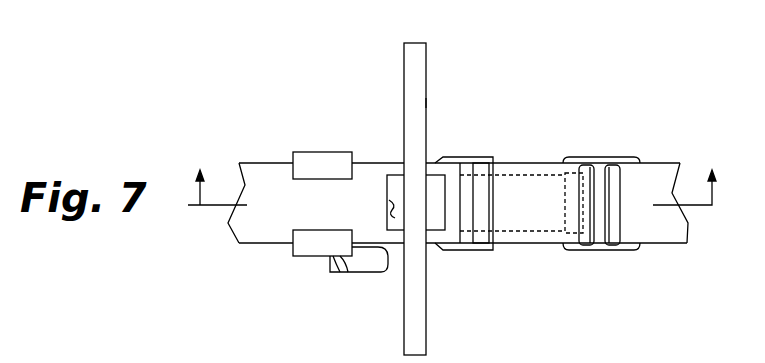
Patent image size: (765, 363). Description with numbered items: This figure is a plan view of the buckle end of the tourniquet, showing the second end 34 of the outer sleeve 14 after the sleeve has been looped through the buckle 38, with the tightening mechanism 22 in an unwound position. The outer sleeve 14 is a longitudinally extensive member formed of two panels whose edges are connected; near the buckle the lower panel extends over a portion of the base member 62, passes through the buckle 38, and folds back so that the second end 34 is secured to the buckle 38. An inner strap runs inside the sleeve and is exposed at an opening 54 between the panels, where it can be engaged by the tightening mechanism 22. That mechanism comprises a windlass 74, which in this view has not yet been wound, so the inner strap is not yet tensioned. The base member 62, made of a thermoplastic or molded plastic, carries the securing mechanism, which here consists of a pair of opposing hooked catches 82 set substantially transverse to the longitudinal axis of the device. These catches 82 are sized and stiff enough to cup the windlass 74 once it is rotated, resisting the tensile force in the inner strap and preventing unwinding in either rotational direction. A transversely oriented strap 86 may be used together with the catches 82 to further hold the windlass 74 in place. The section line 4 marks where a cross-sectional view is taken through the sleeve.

The section line 4- 4 is at (451, 187).
The outer sleeve 14 is at (258, 243).
The tightening mechanism 22 is at (445, 53).
The second end 34 is at (535, 95).
The buckle 38 is at (590, 157).
The opening 54 is at (387, 205).
The base member 62 is at (448, 158).
The windlass 74 is at (427, 103).
The hooked catches 82 is at (308, 163).
The transversely oriented strap 86 is at (348, 262).